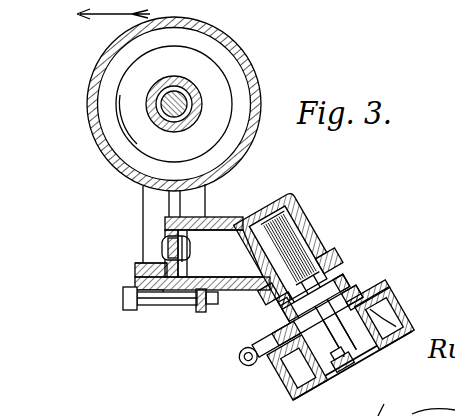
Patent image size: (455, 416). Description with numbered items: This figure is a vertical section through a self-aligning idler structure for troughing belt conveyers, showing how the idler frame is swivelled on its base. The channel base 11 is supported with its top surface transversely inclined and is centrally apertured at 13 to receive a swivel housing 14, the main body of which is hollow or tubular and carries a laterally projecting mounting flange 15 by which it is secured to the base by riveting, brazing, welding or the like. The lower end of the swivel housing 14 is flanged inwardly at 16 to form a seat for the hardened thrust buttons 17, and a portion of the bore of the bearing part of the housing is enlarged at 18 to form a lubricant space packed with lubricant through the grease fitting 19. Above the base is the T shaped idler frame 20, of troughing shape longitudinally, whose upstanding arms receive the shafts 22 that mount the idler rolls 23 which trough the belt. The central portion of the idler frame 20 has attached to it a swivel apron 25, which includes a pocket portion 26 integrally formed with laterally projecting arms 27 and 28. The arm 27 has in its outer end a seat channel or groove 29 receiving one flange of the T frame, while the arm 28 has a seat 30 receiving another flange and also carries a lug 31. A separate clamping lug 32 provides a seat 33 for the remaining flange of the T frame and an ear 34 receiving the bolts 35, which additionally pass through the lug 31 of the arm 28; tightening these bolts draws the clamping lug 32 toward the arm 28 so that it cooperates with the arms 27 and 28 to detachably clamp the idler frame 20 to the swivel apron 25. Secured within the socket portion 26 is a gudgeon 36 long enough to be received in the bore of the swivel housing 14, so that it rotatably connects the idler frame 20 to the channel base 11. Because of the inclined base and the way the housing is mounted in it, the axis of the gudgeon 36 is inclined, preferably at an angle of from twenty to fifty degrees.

The channel base 11 is at (406, 300).
The central aperture 13 is at (392, 345).
The swivel housing 14 is at (318, 382).
The mounting flange 15 is at (372, 282).
The inward flange 16 is at (368, 361).
The thrust buttons 17 is at (350, 370).
The enlarged bore portion 18 is at (276, 318).
The grease fitting 19 is at (239, 356).
The idler frame 20 is at (165, 242).
The shafts 22 is at (180, 99).
The idler rolls 23 is at (86, 97).
The swivel apron 25 is at (305, 214).
The pocket portion 26 is at (318, 233).
The arm 27 is at (228, 216).
The arm 28 is at (243, 278).
The seat channel 29 is at (166, 228).
The seat 30 is at (222, 291).
The lug 31 is at (201, 312).
The clamping lug 32 is at (135, 272).
The seat 33 is at (140, 262).
The ear 34 is at (137, 311).
The bolts 35 is at (163, 306).
The gudgeon 36 is at (330, 250).